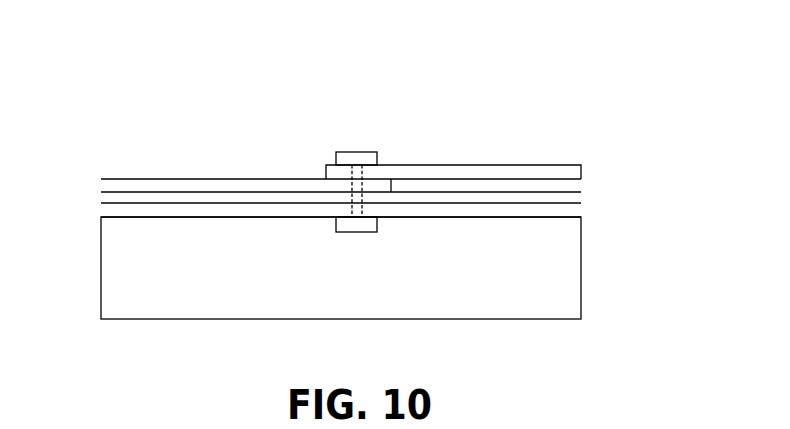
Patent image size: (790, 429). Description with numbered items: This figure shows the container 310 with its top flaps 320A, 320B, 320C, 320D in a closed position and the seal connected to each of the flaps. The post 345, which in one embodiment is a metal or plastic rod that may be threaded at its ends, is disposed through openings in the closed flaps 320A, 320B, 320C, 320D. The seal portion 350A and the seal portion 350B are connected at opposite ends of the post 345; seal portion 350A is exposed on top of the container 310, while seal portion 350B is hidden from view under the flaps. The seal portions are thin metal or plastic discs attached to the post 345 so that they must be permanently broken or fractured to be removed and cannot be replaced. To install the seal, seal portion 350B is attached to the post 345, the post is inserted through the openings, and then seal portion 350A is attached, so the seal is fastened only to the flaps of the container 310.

The container 310 is at (573, 287).
The flap 320A is at (549, 170).
The flap 320B is at (101, 187).
The flap 320C is at (573, 199).
The flap 320D is at (573, 212).
The post 345 is at (348, 185).
The seal portion 350A is at (378, 150).
The seal portion 350B is at (377, 232).